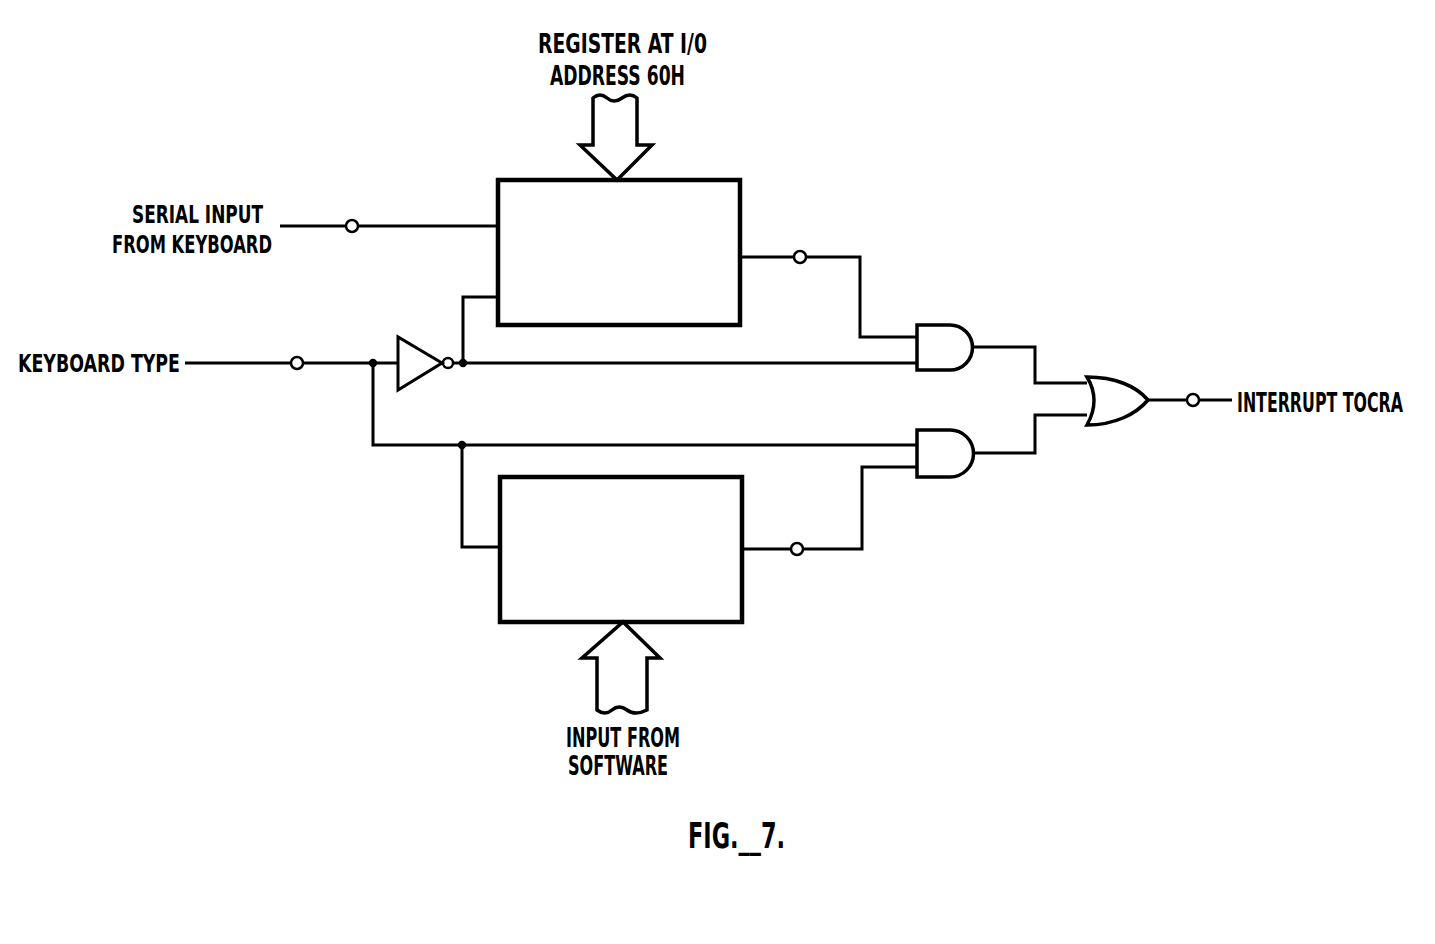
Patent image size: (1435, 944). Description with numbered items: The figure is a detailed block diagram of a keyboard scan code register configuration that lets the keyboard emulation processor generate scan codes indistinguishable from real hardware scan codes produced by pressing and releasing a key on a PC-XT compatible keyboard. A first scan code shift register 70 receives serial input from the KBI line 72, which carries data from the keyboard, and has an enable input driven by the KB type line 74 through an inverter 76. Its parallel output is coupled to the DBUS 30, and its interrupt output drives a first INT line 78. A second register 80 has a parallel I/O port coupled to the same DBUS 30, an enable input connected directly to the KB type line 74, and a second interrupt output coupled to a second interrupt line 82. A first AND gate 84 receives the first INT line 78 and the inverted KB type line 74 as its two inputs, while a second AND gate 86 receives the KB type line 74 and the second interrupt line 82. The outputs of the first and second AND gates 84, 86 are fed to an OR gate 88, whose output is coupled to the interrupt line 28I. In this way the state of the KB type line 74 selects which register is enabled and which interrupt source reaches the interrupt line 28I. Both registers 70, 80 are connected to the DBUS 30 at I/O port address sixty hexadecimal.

The DBUS 30 is at (640, 677).
The first scan code shift register 70 is at (700, 180).
The KBI line 72 is at (356, 221).
The KB type line 74 is at (301, 358).
The inverter 76 is at (417, 347).
The first INT line 78 is at (805, 251).
The second register 80 is at (743, 487).
The second interrupt line 82 is at (802, 543).
The first AND gate 84 is at (960, 325).
The second AND gate 86 is at (960, 430).
The OR gate 88 is at (1122, 378).
The interrupt line 28I is at (1195, 393).